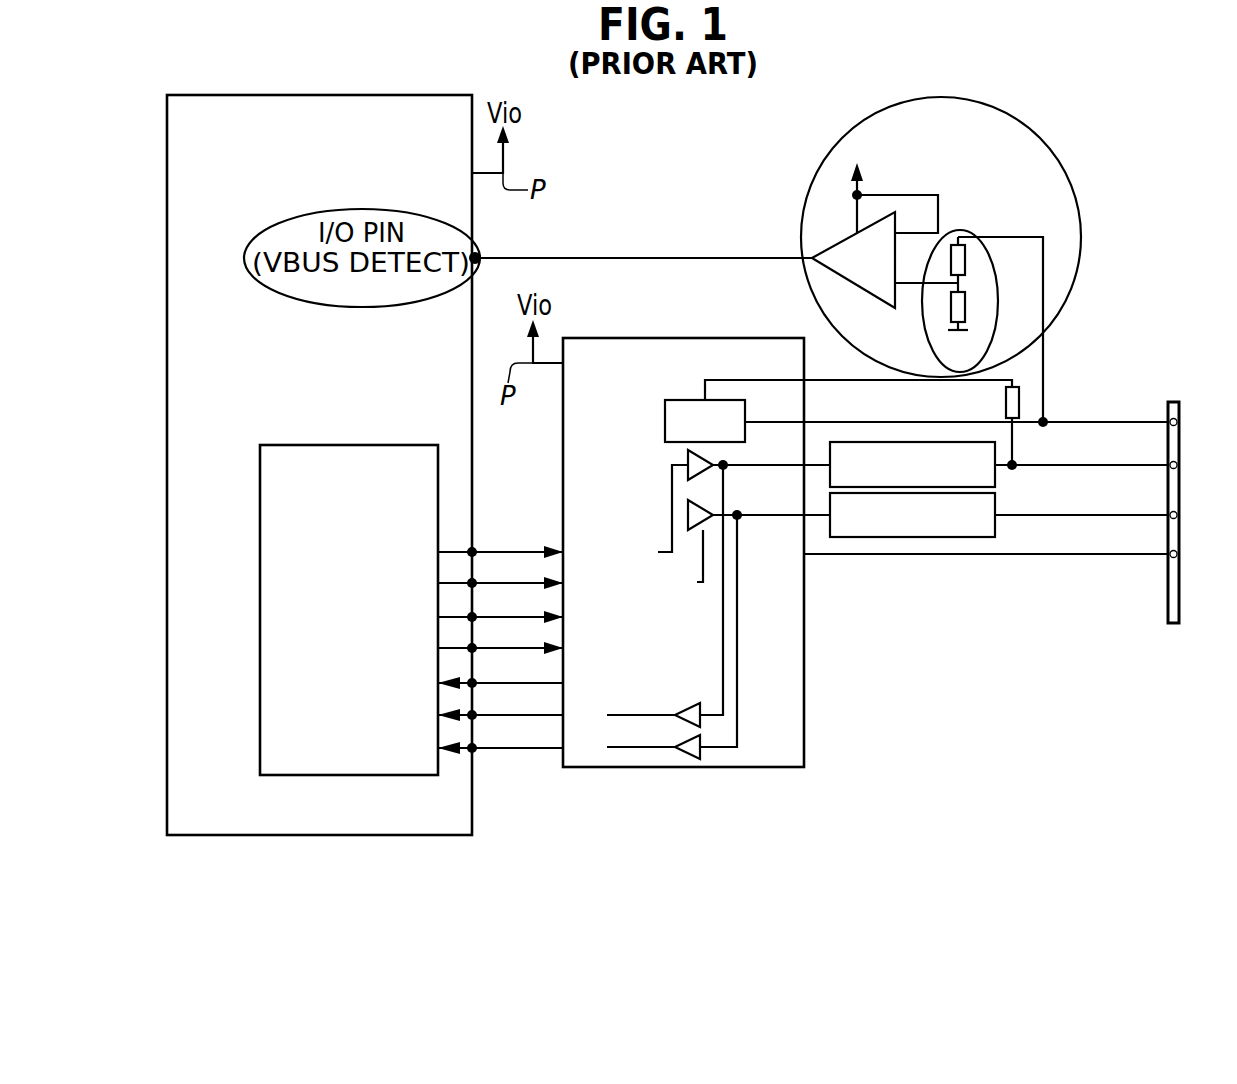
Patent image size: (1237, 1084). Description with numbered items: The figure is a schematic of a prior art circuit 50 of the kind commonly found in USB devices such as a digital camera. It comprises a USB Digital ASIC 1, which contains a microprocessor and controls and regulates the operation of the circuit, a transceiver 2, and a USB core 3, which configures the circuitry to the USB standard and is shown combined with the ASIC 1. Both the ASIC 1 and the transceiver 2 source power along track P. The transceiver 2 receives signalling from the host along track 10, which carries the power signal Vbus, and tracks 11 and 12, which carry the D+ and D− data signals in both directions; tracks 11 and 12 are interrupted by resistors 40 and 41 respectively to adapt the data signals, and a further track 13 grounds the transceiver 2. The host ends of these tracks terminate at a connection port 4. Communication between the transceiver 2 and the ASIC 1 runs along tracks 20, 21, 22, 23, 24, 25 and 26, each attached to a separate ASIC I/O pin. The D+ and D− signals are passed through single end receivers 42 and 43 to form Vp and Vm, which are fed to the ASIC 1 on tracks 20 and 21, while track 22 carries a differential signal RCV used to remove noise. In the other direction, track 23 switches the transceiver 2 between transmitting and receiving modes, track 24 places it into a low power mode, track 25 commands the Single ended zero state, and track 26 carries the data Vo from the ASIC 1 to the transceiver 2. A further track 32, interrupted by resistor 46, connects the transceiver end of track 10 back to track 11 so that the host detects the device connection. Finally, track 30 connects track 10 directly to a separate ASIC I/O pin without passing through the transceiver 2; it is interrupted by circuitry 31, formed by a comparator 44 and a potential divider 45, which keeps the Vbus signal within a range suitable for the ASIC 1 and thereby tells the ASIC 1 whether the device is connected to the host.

The USB Digital ASIC 1 is at (167, 195).
The transceiver 2 is at (672, 338).
The USB core 3 is at (260, 520).
The connection port 4 is at (1173, 625).
The track 10 is at (1148, 422).
The track 11 is at (1150, 467).
The track 12 is at (1150, 516).
The track 13 is at (1148, 556).
The track 20 is at (450, 748).
The track 21 is at (450, 715).
The track 22 is at (450, 683).
The track 23 is at (450, 650).
The track 24 is at (450, 617).
The track 25 is at (450, 583).
The track 26 is at (450, 552).
The track 30 is at (675, 258).
The circuitry 31 is at (1054, 153).
The track 32 is at (822, 378).
The resistor 40 is at (997, 485).
The resistor 41 is at (900, 537).
The single end receiver 42 is at (690, 703).
The single end receiver 43 is at (688, 763).
The comparator 44 is at (892, 306).
The potential divider 45 is at (968, 232).
The resistor 46 is at (1020, 388).
The prior art circuit 50 is at (832, 763).